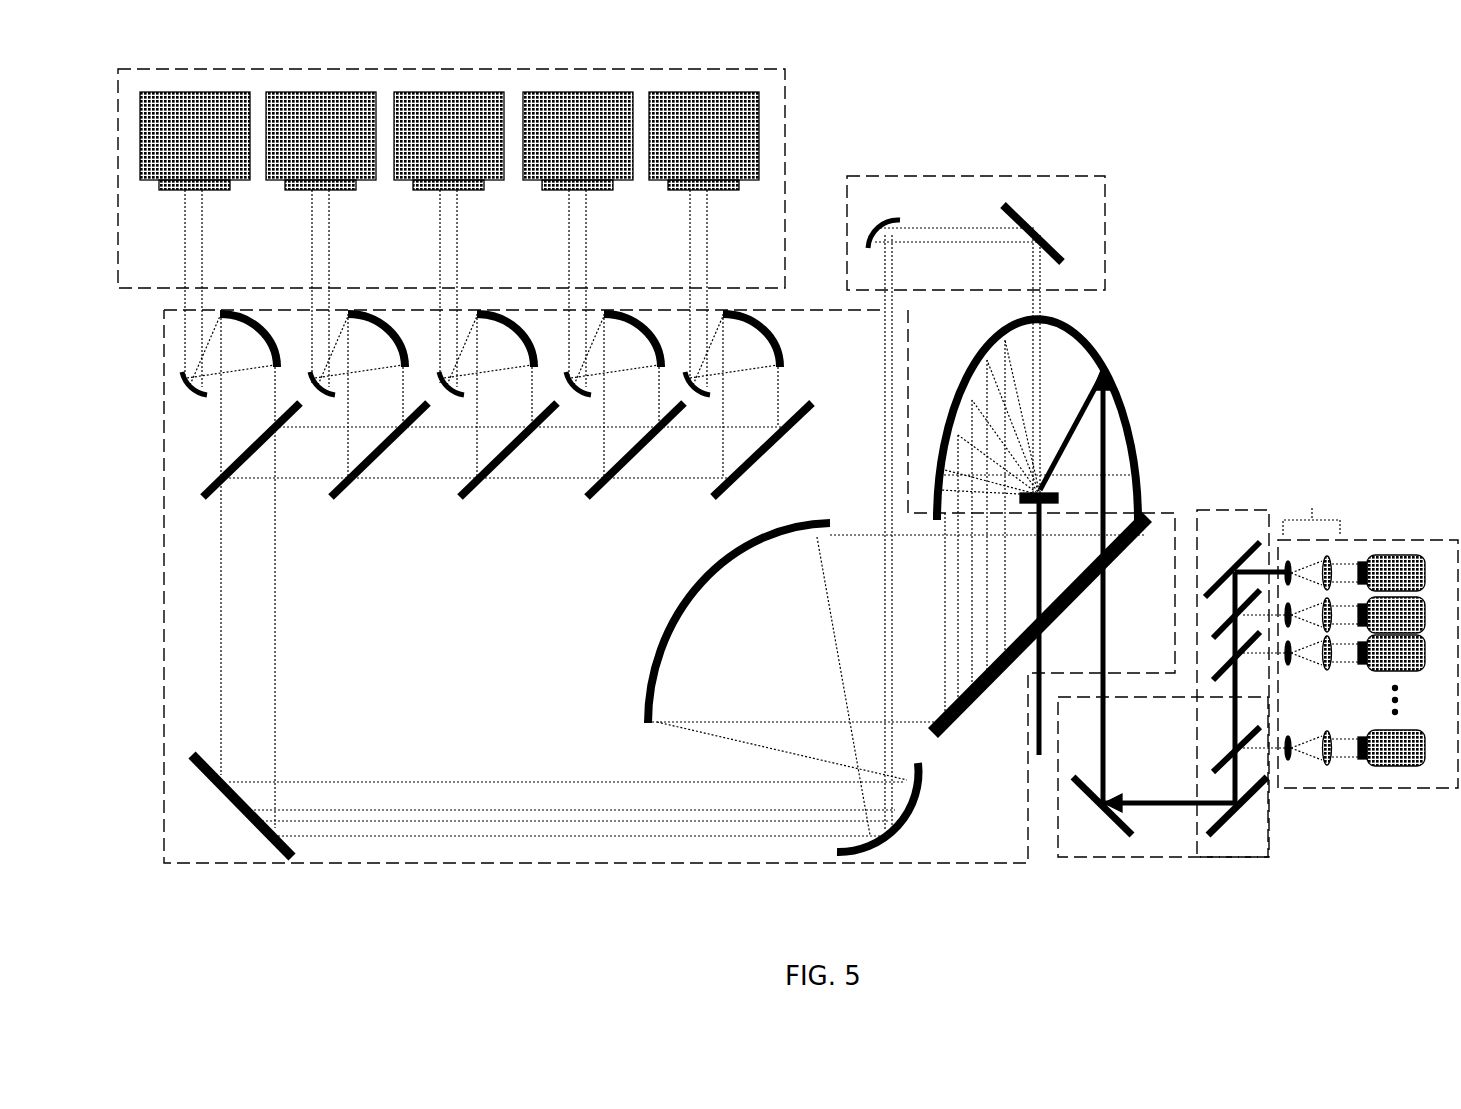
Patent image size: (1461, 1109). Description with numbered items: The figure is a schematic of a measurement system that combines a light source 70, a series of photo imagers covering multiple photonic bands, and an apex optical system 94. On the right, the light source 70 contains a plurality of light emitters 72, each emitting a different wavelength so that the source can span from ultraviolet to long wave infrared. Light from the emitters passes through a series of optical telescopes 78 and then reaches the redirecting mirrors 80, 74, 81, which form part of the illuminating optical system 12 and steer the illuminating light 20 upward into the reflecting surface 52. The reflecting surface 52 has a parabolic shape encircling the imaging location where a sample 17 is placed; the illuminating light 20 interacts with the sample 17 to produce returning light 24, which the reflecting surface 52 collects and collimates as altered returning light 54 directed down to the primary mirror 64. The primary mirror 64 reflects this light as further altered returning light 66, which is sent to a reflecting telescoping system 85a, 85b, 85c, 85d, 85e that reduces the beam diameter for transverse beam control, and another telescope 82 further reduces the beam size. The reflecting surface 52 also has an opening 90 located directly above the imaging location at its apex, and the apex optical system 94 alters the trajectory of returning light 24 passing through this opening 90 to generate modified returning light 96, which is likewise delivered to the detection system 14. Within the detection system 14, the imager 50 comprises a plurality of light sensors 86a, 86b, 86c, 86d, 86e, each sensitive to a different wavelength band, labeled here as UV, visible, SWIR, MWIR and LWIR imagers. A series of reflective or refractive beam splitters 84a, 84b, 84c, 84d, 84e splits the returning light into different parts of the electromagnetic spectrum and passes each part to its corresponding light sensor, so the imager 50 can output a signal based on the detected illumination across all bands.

The illuminating optical system 12 is at (1186, 858).
The detection system 14 is at (640, 865).
The sample 17 is at (1040, 486).
The illuminating light 20 is at (1106, 768).
The returning light 24 is at (1000, 365).
The imager 50 is at (786, 160).
The reflecting surface 52 is at (1100, 355).
The altered returning light 54 is at (945, 570).
The mirror 64 is at (982, 705).
The further altered returning light 66 is at (786, 720).
The light source 70 is at (1392, 541).
The light emitters 72 is at (1358, 660).
The redirecting mirror 74 is at (1105, 820).
The optical telescopes 78 is at (1311, 620).
The redirecting mirrors 80 is at (1240, 745).
The redirecting mirror 81 is at (1250, 805).
The telescope 82 is at (835, 852).
The beam splitter 84a is at (206, 495).
The beam splitter 84b is at (337, 498).
The beam splitter 84c is at (466, 495).
The beam splitter 84d is at (590, 495).
The beam splitter 84e is at (716, 495).
The reflecting telescoping system element 85a is at (200, 397).
The reflecting telescoping system element 85b is at (340, 397).
The reflecting telescoping system element 85c is at (468, 397).
The reflecting telescoping system element 85d is at (592, 397).
The reflecting telescoping system element 85e is at (782, 365).
The light sensor 86a is at (240, 183).
The light sensor 86b is at (366, 183).
The light sensor 86c is at (494, 183).
The light sensor 86d is at (623, 183).
The light sensor 86e is at (750, 183).
The opening 90 is at (1040, 322).
The apex optical system 94 is at (1105, 195).
The modified returning light 96 is at (886, 443).